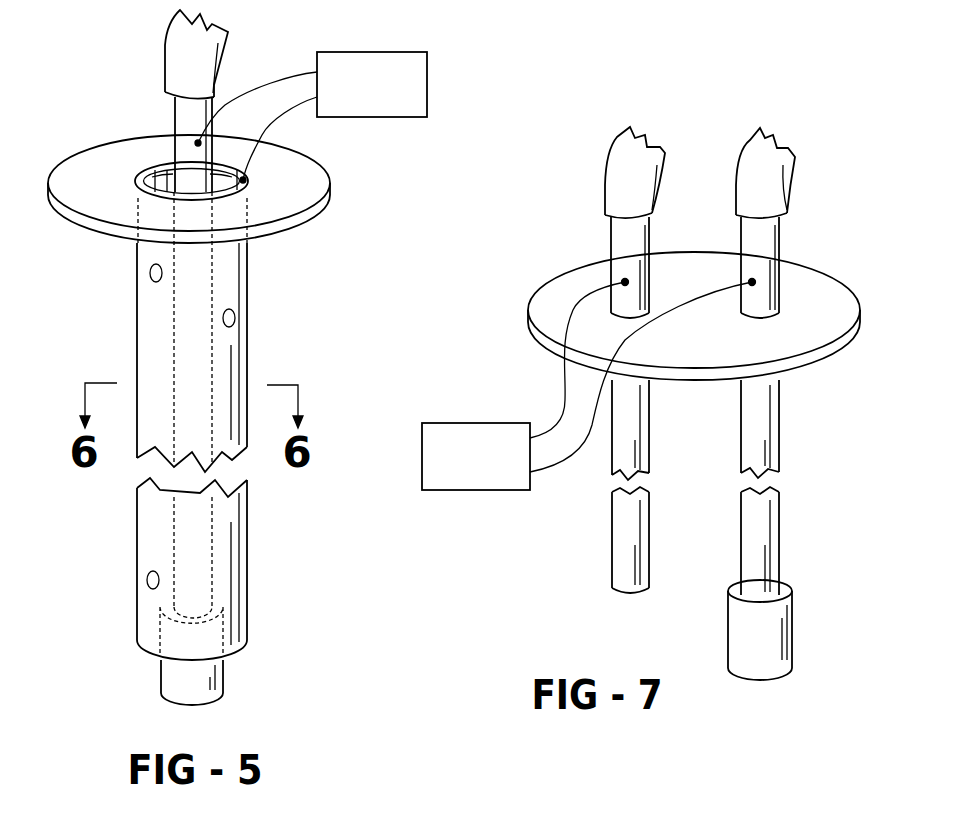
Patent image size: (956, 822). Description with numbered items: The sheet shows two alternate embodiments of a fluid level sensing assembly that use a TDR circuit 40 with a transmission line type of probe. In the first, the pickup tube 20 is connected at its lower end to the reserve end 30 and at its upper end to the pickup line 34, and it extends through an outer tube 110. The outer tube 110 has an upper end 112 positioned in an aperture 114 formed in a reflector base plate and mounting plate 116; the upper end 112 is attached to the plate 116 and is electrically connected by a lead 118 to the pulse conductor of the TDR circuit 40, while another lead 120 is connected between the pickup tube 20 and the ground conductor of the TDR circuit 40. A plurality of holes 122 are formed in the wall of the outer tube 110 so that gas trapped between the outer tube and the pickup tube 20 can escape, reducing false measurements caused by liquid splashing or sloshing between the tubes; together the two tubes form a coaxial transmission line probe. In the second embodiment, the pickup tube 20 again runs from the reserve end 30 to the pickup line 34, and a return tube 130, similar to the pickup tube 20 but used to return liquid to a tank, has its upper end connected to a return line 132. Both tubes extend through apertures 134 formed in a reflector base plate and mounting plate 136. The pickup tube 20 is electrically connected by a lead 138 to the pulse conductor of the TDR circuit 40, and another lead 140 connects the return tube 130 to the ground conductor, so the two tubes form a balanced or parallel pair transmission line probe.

In FIG. 5, the pickup tube 20 is at (175, 112).
In FIG. 7, the pickup tube 20 is at (778, 235).
In FIG. 5, the reserve end 30 is at (162, 677).
In FIG. 7, the reserve end 30 is at (793, 620).
In FIG. 5, the pickup line 34 is at (173, 38).
In FIG. 7, the pickup line 34 is at (750, 153).
In FIG. 5, the TDR circuit 40 is at (427, 80).
In FIG. 7, the TDR circuit 40 is at (460, 423).
In FIG. 5, the outer tube 110 is at (248, 272).
In FIG. 5, the upper end 112 is at (143, 182).
In FIG. 5, the aperture 114 is at (153, 165).
In FIG. 5, the reflector base plate and mounting plate 116 is at (312, 183).
In FIG. 5, the lead 118 is at (290, 107).
In FIG. 5, the lead 120 is at (270, 78).
In FIG. 5, the holes 122 is at (156, 278).
In FIG. 7, the return tube 130 is at (622, 245).
In FIG. 7, the return line 132 is at (617, 152).
In FIG. 7, the apertures 134 is at (645, 303).
In FIG. 7, the reflector base plate and mounting plate 136 is at (745, 353).
In FIG. 7, the lead 138 is at (580, 463).
In FIG. 7, the lead 140 is at (563, 418).